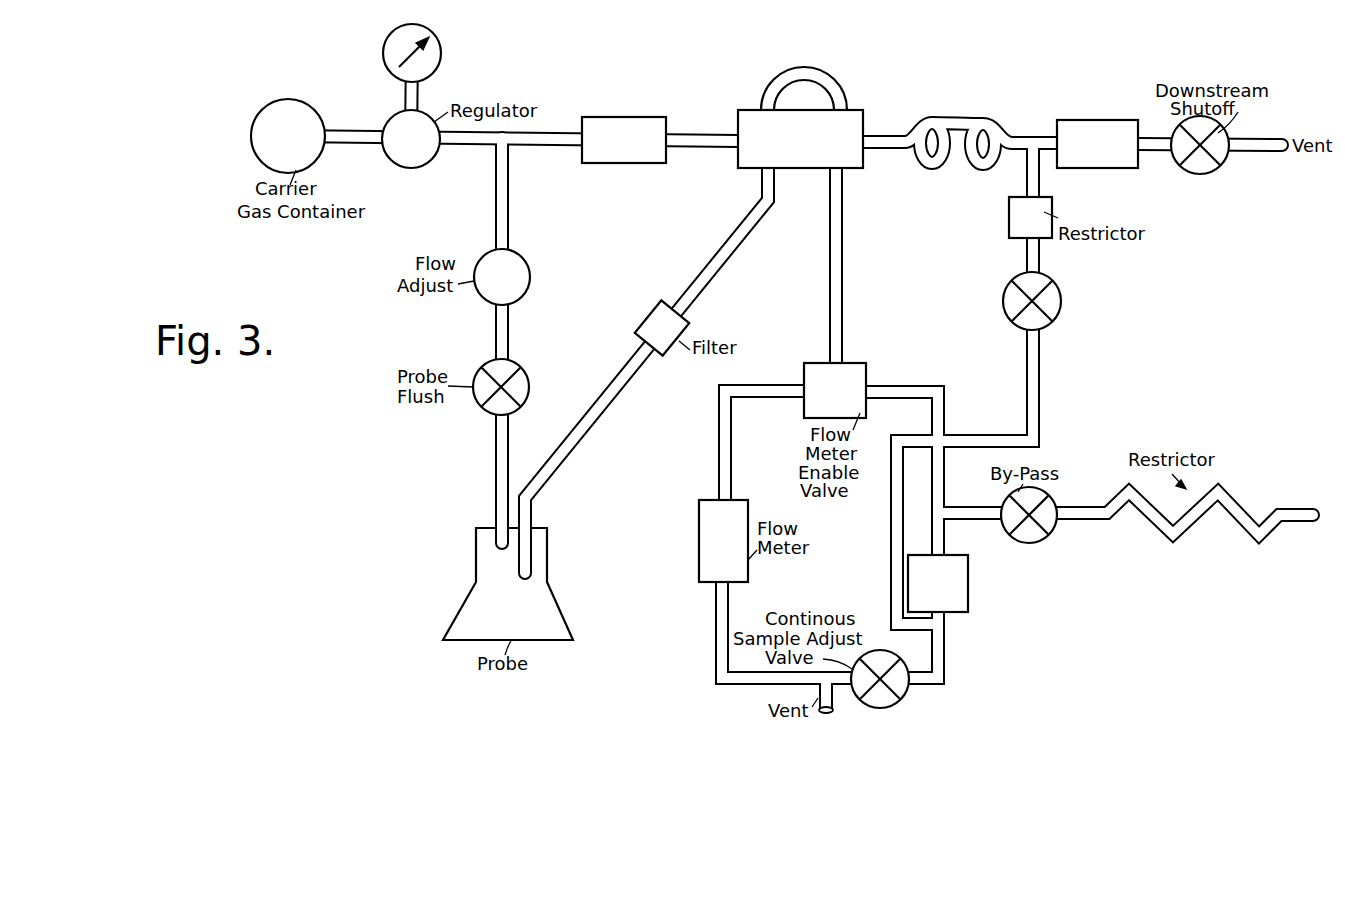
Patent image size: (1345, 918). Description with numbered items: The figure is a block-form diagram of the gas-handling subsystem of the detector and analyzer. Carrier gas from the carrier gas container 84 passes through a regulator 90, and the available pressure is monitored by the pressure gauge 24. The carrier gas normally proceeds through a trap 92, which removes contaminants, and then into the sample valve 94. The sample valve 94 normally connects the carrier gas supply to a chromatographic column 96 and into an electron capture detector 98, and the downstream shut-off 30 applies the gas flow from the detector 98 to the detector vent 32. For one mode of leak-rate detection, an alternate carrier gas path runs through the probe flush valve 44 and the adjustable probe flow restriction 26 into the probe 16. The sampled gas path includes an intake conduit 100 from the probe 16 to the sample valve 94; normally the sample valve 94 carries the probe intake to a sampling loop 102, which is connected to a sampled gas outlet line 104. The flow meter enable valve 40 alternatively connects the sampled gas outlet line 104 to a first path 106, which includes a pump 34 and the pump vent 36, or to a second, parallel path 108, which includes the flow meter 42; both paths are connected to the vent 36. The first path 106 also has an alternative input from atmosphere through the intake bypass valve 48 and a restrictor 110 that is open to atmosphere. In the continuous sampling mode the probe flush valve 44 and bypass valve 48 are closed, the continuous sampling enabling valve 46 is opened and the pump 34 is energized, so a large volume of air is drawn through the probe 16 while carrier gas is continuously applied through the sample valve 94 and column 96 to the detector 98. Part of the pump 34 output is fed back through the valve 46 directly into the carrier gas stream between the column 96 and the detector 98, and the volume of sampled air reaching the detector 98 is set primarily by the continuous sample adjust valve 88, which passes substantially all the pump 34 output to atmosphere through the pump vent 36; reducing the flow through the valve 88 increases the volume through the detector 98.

The probe 16 is at (482, 583).
The pressure gauge 24 is at (433, 33).
The probe flow restriction 26 is at (528, 396).
The downstream shut-off 30 is at (1197, 172).
The detector vent 32 is at (1283, 153).
The pump 34 is at (968, 596).
The pump vent 36 is at (828, 716).
The flow meter enable valve 40 is at (806, 412).
The flow meter 42 is at (700, 534).
The probe flush valve 44 is at (531, 272).
The continuous sampling enabling valve 46 is at (1008, 310).
The intake bypass valve 48 is at (1029, 545).
The carrier gas container 84 is at (252, 136).
The continuous sample adjust valve 88 is at (898, 699).
The regulator 90 is at (398, 160).
The trap 92 is at (592, 165).
The sample valve 94 is at (740, 165).
The chromatographic column 96 is at (930, 166).
The electron capture detector 98 is at (1124, 170).
The intake conduit 100 is at (581, 438).
The sampling loop 102 is at (788, 70).
The sampled gas outlet line 104 is at (843, 298).
The first path 106 is at (950, 422).
The second parallel path 108 is at (718, 441).
The restrictor 110 is at (1170, 541).